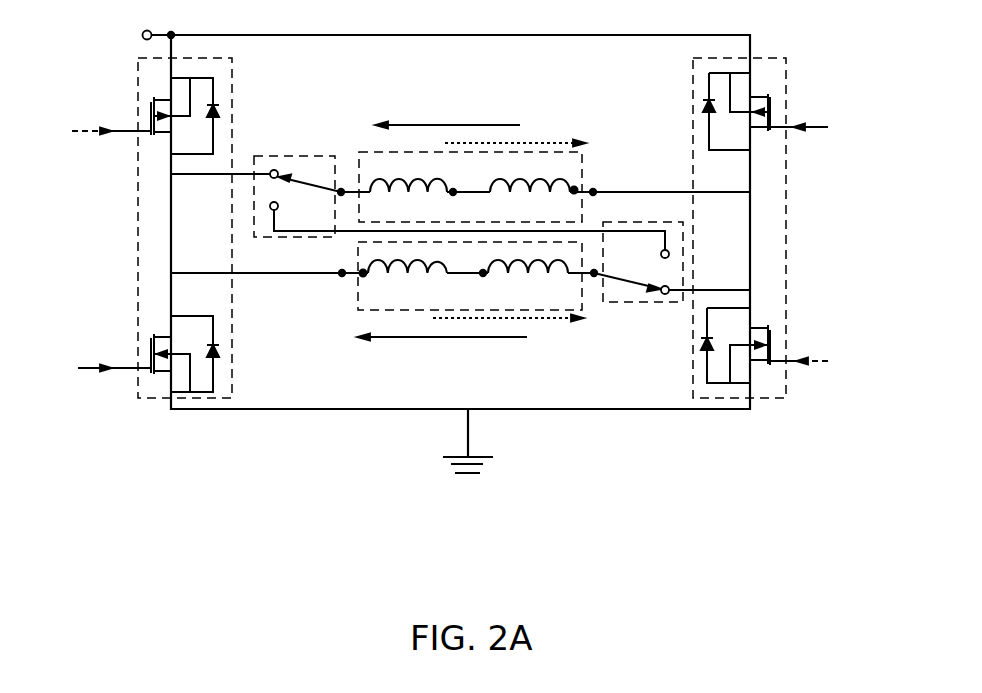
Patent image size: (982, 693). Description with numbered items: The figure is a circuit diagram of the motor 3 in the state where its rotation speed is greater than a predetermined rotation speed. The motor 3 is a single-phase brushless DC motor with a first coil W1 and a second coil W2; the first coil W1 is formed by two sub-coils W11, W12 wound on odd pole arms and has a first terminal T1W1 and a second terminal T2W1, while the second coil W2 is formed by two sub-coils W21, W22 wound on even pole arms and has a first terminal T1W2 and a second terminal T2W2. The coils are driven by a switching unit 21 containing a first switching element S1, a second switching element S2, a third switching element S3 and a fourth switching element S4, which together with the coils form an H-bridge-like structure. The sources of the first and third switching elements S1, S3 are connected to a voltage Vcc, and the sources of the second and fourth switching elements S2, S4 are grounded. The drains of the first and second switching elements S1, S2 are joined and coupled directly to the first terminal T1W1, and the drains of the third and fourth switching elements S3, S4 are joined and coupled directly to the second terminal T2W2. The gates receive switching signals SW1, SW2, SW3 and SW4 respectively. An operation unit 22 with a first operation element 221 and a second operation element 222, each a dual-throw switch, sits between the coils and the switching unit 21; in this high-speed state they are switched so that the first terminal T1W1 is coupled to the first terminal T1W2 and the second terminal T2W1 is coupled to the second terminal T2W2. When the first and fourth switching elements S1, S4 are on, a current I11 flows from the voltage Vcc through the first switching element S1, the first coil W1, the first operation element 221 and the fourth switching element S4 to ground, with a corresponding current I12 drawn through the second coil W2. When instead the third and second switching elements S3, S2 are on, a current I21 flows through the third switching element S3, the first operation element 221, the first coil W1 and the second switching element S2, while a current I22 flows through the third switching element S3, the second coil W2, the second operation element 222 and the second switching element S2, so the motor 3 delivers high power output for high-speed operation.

The motor 3 is at (460, 179).
The switching unit 21 is at (460, 206).
The operation unit 22 is at (460, 230).
The first operation element 221 is at (264, 137).
The second operation element 222 is at (672, 306).
The first coil W1 is at (583, 162).
The second coil W2 is at (358, 302).
The sub-coil W11 is at (620, 176).
The sub-coil W12 is at (394, 174).
The sub-coil W21 is at (541, 281).
The sub-coil W22 is at (309, 281).
The first switching element S1 is at (741, 111).
The second switching element S2 is at (740, 343).
The third switching element S3 is at (183, 112).
The fourth switching element S4 is at (182, 349).
The switching signal SW1 is at (810, 115).
The switching signal SW2 is at (810, 351).
The switching signal SW3 is at (110, 119).
The switching signal SW4 is at (110, 358).
The first terminal of the first coil T1W1 is at (595, 189).
The second terminal of the first coil T2W1 is at (344, 188).
The first terminal of the second coil T1W2 is at (594, 277).
The second terminal of the second coil T2W2 is at (342, 270).
The current I11 is at (464, 123).
The current I12 is at (459, 338).
The current I21 is at (502, 141).
The current I22 is at (493, 320).
The voltage Vcc is at (139, 33).